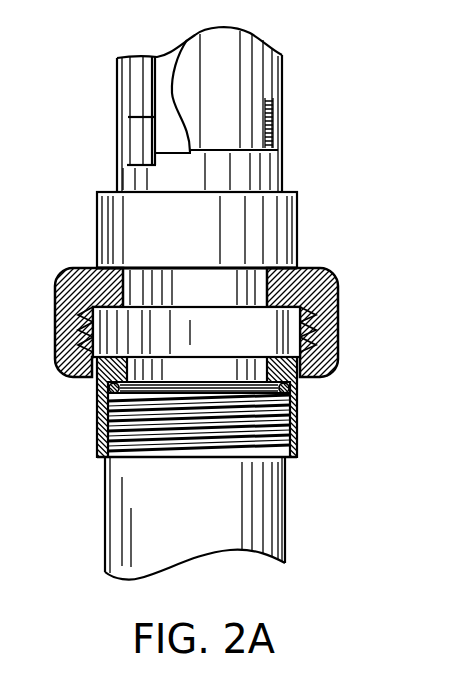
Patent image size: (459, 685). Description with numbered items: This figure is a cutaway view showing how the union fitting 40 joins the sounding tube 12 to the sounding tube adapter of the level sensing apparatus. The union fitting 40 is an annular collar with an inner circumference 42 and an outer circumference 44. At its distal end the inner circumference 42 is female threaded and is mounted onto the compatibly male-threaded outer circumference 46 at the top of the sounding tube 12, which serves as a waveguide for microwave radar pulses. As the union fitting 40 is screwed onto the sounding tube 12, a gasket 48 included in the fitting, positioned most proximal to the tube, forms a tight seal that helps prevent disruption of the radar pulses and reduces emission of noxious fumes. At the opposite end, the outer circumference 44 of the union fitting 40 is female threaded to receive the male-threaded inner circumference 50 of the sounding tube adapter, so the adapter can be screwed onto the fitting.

The sounding tube 12 is at (143, 538).
The union fitting 40 is at (100, 402).
The inner circumference 42 is at (110, 440).
The outer circumference 44 is at (312, 352).
The outer circumference 46 is at (115, 460).
The gasket 48 is at (285, 389).
The inner circumference 50 is at (313, 313).